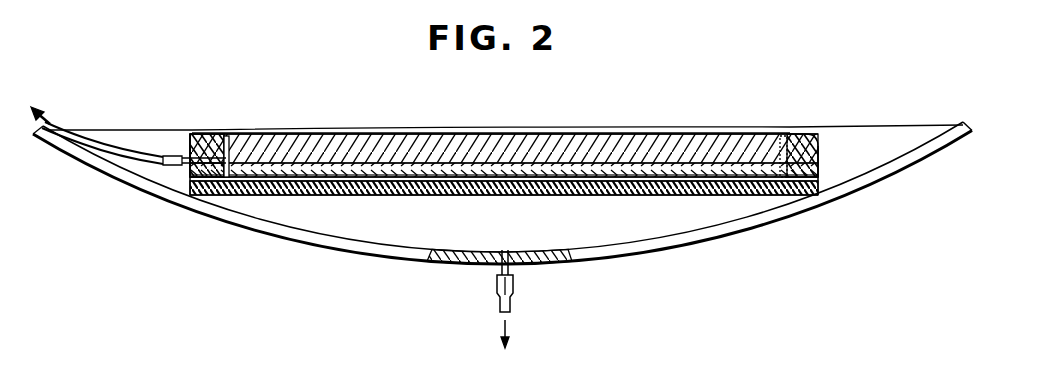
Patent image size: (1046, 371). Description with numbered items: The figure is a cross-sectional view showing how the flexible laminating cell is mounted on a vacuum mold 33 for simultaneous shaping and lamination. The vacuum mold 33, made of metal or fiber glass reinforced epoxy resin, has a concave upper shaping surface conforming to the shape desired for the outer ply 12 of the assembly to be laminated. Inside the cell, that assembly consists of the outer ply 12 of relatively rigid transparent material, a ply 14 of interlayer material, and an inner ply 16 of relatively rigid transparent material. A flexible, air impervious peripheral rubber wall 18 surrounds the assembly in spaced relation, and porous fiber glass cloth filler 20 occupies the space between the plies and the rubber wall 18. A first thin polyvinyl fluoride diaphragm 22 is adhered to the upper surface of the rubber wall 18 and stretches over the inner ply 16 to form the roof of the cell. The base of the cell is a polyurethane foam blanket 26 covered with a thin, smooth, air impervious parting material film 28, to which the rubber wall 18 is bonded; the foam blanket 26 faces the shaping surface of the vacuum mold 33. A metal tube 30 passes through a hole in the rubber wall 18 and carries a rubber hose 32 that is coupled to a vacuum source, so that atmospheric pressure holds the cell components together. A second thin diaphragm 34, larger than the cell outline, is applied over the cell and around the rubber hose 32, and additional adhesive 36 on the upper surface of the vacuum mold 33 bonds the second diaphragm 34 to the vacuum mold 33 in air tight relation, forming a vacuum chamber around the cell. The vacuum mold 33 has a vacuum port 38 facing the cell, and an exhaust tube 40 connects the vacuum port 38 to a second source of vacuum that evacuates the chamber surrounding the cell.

The outer ply of relatively rigid transparent material 12 is at (660, 172).
The ply of interlayer material 14 is at (332, 167).
The inner ply of relatively rigid transparent material 16 is at (357, 142).
The peripheral rubber wall 18 is at (212, 142).
The porous fiber glass cloth filler 20 is at (230, 137).
The first thin flexible air impervious diaphragm 22 is at (690, 133).
The polyurethane foam blanket 26 is at (402, 185).
The parting material film 28 is at (597, 178).
The metal tube 30 is at (185, 155).
The rubber hose 32 is at (60, 123).
The vacuum mold 33 is at (725, 231).
The second thin diaphragm 34 is at (852, 129).
The additional adhesive 36 is at (950, 127).
The vacuum port 38 is at (505, 250).
The exhaust tube 40 is at (512, 297).